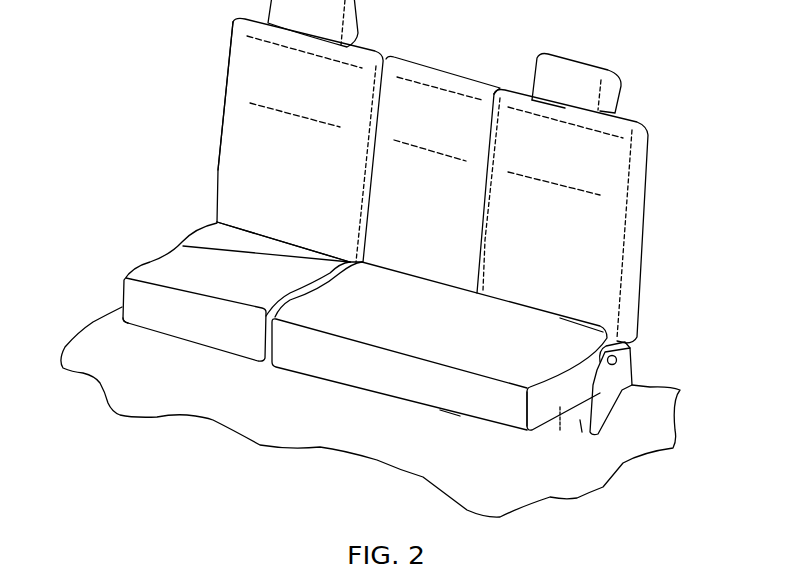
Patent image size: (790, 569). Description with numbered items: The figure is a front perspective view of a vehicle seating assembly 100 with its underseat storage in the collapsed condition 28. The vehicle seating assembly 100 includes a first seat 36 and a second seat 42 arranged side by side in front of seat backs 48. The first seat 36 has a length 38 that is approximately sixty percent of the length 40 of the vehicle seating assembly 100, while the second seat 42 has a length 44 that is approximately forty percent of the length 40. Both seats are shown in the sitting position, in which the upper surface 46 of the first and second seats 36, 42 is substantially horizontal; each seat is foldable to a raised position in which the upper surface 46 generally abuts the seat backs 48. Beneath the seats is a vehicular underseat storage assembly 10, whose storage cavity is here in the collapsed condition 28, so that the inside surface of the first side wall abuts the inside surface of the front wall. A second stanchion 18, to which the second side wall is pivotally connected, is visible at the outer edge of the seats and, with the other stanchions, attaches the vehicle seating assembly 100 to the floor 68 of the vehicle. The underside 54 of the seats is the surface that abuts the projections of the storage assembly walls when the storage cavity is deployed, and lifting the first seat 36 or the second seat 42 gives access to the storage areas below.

The vehicle seating assembly 100 is at (137, 37).
The vehicular underseat storage assembly 10 is at (538, 432).
The second stanchion 18 is at (580, 420).
The collapsed condition 28 is at (291, 396).
The first seat 36 is at (383, 382).
The length 38 is at (537, 375).
The length 40 is at (575, 348).
The second seat 42 is at (207, 333).
The length 44 is at (268, 303).
The upper surface 46 is at (208, 237).
The seat backs 48 is at (300, 168).
The underside 54 is at (143, 333).
The floor 68 is at (122, 370).